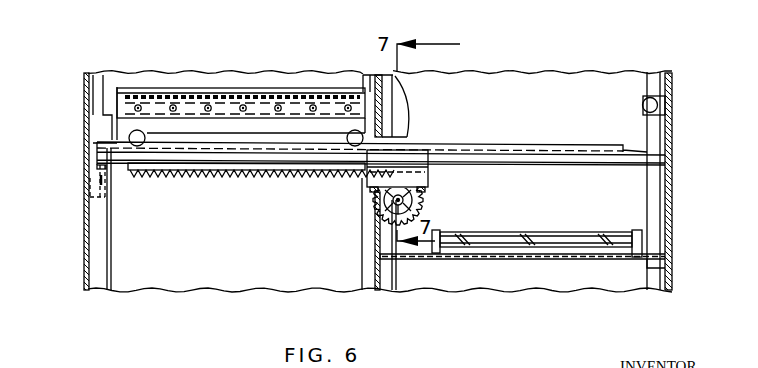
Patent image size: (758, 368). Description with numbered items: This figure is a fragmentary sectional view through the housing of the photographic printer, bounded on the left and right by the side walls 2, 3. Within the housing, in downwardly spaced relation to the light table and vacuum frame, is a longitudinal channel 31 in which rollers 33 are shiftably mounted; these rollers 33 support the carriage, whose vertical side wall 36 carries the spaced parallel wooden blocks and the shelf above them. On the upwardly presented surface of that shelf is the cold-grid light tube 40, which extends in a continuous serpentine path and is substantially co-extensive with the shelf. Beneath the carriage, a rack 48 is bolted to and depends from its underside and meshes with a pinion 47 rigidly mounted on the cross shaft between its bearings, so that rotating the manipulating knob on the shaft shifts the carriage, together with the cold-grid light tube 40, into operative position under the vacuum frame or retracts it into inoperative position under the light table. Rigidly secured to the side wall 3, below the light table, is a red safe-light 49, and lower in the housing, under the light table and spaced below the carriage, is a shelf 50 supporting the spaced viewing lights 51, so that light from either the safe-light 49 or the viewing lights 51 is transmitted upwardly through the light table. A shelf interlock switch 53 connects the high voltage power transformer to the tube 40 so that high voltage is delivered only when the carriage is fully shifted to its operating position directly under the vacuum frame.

The side wall 2 is at (84, 252).
The side wall 3 is at (672, 216).
The longitudinal channel 31 is at (503, 143).
The rollers 33 is at (133, 130).
The vertical side wall of carriage 36 is at (405, 126).
The cold-grid light tube 40 is at (184, 97).
The pinion 47 is at (421, 206).
The rack 48 is at (262, 178).
The red safe-light 49 is at (655, 98).
The shelf 50 is at (500, 258).
The viewing lights 51 is at (548, 232).
The shelf interlock switch 53 is at (97, 170).